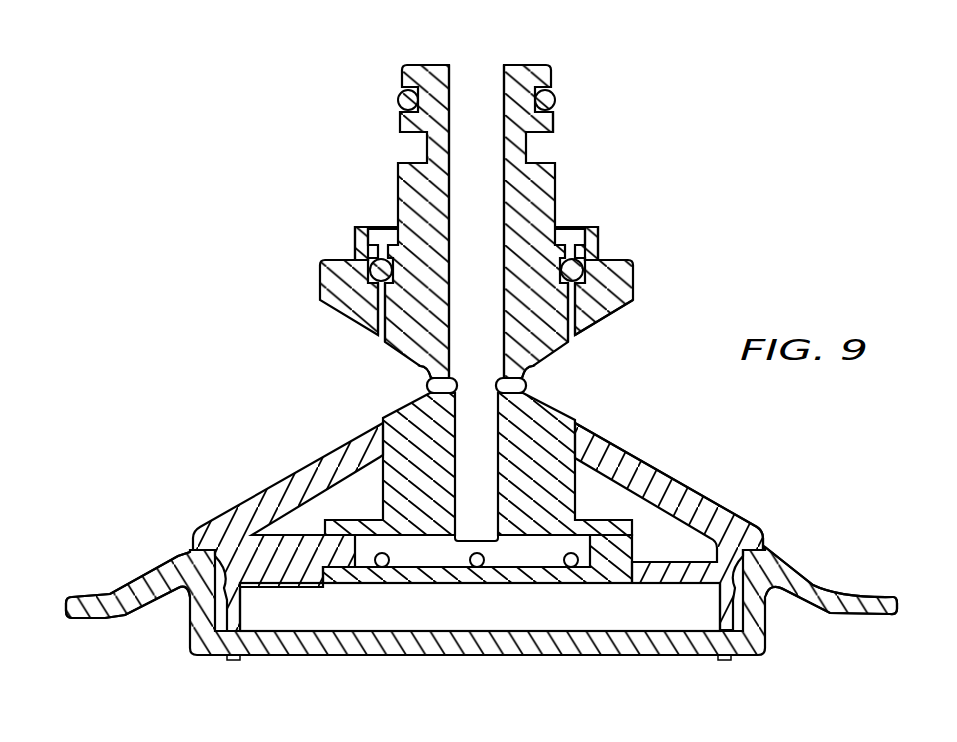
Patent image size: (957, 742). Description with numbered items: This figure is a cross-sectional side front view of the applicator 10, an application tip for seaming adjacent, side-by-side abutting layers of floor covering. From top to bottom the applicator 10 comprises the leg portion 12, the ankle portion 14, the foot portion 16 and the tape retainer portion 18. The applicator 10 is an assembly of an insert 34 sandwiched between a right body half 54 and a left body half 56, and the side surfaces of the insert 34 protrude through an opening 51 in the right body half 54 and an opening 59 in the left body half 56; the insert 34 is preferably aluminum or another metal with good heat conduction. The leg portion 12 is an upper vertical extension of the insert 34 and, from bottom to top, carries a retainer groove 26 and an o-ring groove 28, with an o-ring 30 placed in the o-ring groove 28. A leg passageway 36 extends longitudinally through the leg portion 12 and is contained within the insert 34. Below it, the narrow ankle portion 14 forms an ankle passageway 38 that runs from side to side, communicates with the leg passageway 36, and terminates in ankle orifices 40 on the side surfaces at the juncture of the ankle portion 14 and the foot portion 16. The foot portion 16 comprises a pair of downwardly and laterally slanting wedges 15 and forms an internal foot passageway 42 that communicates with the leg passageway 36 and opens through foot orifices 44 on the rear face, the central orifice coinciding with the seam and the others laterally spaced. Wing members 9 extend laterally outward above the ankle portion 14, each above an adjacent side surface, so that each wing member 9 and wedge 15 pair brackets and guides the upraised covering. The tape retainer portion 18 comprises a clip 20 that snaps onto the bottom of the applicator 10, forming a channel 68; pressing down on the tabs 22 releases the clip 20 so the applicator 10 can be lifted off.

The applicator 10 is at (238, 333).
The leg portion 12 is at (398, 183).
The leg passageway 36 is at (487, 83).
The o-ring groove 28 is at (399, 94).
The o-ring 30 is at (556, 97).
The retainer groove 26 is at (530, 140).
The insert 34 is at (531, 196).
The right body half 54 is at (352, 245).
The left body half 56 is at (600, 239).
The wing member 9 is at (320, 285).
The opening 51 is at (372, 337).
The opening 59 is at (584, 341).
The ankle passageway 38 is at (424, 373).
The ankle orifice 40 is at (427, 387).
The ankle portion 14 is at (633, 375).
The wedge 15 is at (292, 478).
The foot portion 16 is at (748, 508).
The foot passageway 42 is at (452, 554).
The foot orifice 44 is at (378, 569).
The tape retainer portion 18 is at (188, 651).
The tab 22 is at (95, 600).
The clip 20 is at (635, 652).
The channel 68 is at (605, 606).